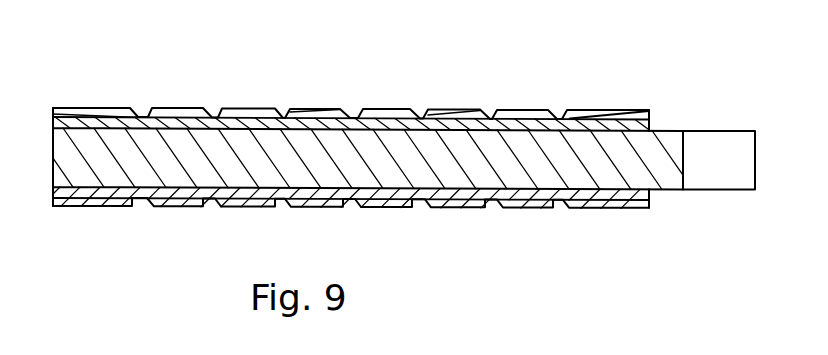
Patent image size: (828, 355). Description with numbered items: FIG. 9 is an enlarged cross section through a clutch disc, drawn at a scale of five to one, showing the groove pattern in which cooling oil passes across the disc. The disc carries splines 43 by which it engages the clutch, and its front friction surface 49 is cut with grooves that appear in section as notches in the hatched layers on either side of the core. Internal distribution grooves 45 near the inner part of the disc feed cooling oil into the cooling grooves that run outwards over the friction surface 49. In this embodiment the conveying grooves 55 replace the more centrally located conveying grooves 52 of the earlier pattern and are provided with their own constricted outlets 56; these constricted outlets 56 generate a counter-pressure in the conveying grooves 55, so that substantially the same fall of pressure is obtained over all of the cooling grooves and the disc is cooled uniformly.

The splines 43 is at (707, 145).
The internal distribution grooves 45 is at (143, 115).
The front friction surface 49 is at (372, 114).
The conveying grooves 55 is at (527, 116).
The constricted outlets 56 is at (630, 120).
The conveying grooves 52 is at (398, 208).